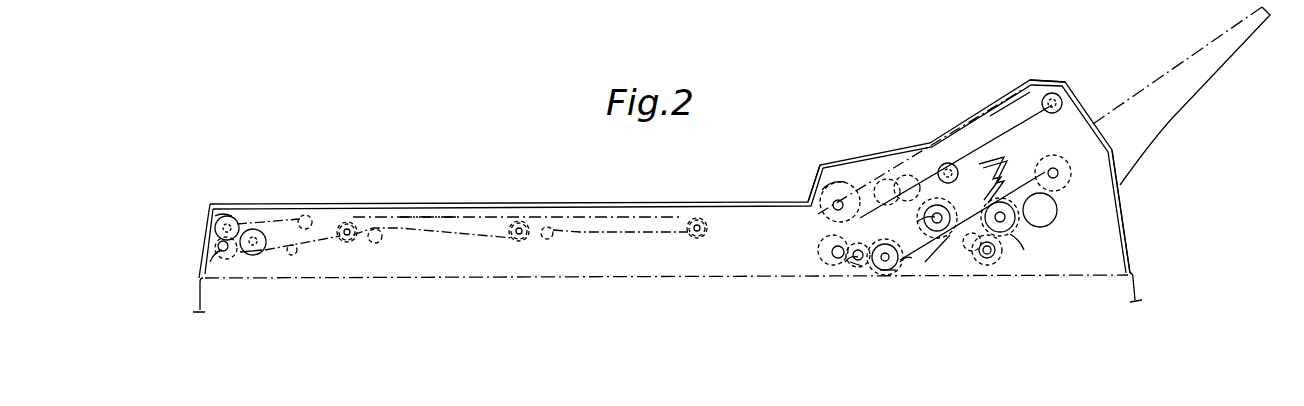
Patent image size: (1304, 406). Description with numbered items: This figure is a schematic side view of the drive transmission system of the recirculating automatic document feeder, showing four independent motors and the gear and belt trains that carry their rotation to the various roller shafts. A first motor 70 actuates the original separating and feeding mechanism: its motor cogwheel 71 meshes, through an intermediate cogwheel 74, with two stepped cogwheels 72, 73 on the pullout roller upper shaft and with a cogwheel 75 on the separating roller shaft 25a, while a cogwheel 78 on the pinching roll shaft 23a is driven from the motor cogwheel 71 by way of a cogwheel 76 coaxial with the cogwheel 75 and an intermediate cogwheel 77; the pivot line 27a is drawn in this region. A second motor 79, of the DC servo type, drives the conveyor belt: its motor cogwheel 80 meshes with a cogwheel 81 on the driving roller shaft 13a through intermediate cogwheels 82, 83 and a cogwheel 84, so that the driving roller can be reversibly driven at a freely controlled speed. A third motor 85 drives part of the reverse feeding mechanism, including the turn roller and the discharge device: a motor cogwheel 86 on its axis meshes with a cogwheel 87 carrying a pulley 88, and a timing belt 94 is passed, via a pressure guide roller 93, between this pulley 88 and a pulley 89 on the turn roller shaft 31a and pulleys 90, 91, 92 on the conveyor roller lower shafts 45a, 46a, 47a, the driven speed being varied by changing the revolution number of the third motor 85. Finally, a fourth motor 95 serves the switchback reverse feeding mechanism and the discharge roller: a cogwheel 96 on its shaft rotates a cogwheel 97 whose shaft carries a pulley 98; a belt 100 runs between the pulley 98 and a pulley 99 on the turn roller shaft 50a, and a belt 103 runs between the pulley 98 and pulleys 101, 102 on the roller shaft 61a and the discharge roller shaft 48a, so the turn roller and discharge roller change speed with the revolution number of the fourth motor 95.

The driving roller shaft 13a is at (880, 265).
The pinching roll shaft 23a is at (1058, 172).
The separating roller shaft 25a is at (994, 258).
The pivot line 27a is at (945, 242).
The turn roller shaft 31a is at (254, 252).
The conveyor roller (lower) shaft 45a is at (352, 230).
The conveyor roller (lower) shaft 46a is at (525, 225).
The conveyor roller (lower) shaft 47a is at (700, 220).
The discharge roller shaft 48a is at (1056, 96).
The turn roller shaft 50a is at (822, 196).
The roller shaft 61a is at (946, 165).
The first motor 70 is at (997, 237).
The motor cogwheel 71 is at (985, 262).
The stepped cogwheel 72 is at (958, 244).
The stepped cogwheel 73 is at (918, 221).
The intermediate cogwheel 74 is at (948, 222).
The cogwheel 75 is at (1020, 236).
The cogwheel 76 is at (1020, 228).
The intermediate cogwheel 77 is at (1058, 212).
The cogwheel 78 is at (1050, 160).
The second motor 79 is at (818, 247).
The motor cogwheel 80 is at (832, 256).
The cogwheel 81 is at (889, 272).
The intermediate cogwheel 82 is at (854, 268).
The intermediate cogwheel 83 is at (848, 263).
The cogwheel 84 is at (906, 262).
The third motor 85 is at (216, 259).
The motor cogwheel 86 is at (218, 243).
The cogwheel 87 is at (217, 222).
The pulley 88 is at (226, 222).
The pulley 89 is at (257, 226).
The pulley 90 is at (345, 224).
The pulley 91 is at (516, 224).
The pulley 92 is at (691, 219).
The pressure guide roller 93 is at (305, 215).
The timing belt 94 is at (429, 217).
The fourth motor 95 is at (905, 178).
The cogwheel 96 is at (883, 181).
The cogwheel 97 is at (858, 250).
The pulley 98 is at (878, 198).
The pulley 99 is at (816, 210).
The belt 100 is at (848, 184).
The pulley 101 is at (957, 157).
The pulley 102 is at (1047, 106).
The belt 103 is at (1008, 118).